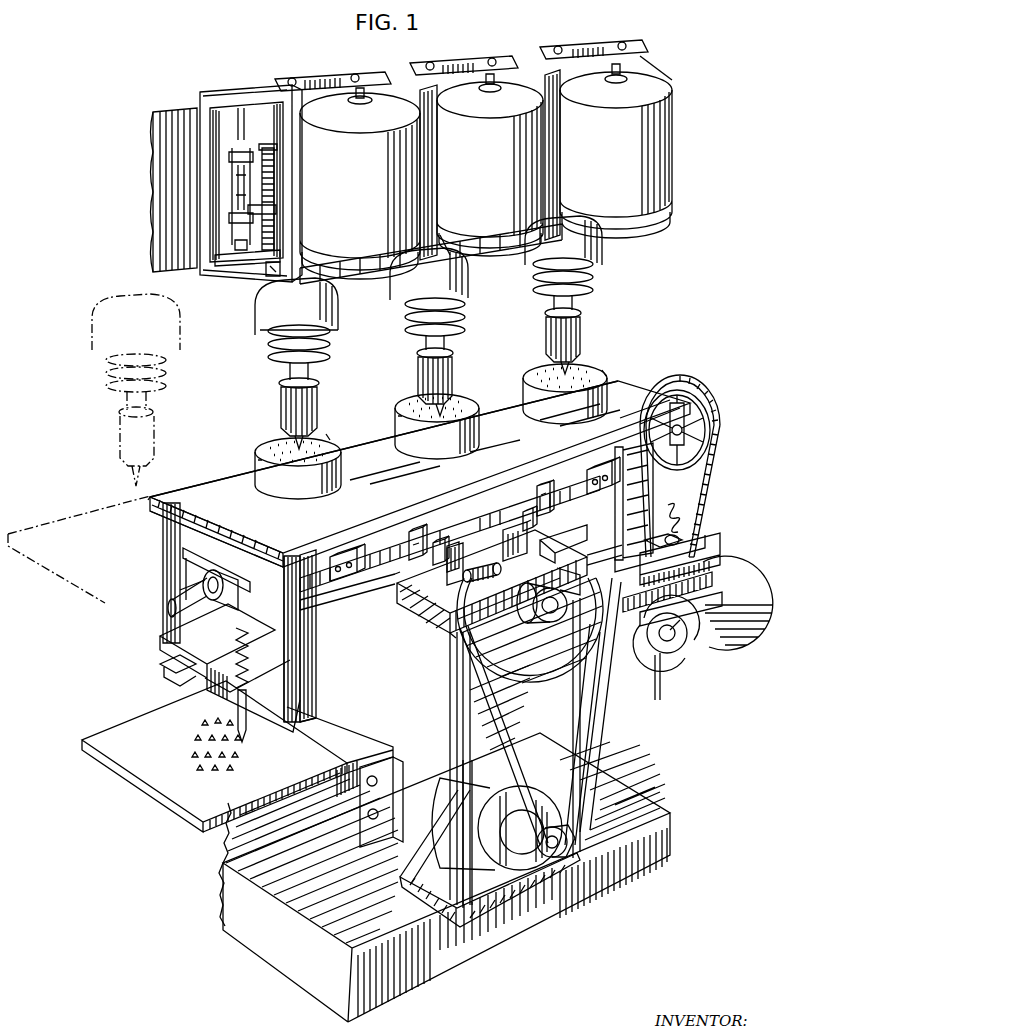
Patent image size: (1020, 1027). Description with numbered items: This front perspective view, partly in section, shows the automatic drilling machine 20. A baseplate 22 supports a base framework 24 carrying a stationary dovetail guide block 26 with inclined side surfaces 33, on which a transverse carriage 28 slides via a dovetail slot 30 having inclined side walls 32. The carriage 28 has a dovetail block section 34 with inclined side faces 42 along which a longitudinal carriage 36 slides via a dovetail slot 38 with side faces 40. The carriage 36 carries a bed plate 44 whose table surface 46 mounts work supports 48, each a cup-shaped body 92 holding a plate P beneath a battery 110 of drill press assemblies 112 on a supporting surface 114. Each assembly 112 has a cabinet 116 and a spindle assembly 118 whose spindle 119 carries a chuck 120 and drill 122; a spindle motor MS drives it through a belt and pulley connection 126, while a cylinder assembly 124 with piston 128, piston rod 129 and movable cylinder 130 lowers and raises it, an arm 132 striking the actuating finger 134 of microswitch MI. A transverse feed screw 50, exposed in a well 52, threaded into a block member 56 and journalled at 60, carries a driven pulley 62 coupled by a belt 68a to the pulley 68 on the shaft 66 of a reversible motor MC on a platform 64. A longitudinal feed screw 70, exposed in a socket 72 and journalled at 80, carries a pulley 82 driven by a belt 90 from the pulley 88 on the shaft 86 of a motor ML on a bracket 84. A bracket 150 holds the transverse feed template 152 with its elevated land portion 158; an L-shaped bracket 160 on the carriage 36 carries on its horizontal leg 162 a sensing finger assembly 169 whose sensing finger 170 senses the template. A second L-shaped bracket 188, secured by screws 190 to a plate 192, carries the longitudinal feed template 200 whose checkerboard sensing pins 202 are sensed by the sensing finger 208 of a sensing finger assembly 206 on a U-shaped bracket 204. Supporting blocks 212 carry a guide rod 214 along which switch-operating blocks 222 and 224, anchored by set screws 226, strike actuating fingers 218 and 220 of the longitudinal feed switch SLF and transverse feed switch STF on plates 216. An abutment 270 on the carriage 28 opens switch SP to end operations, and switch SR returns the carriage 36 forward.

The automatic drilling machine 20 is at (146, 233).
The baseplate 22 is at (672, 815).
The base framework 24 is at (524, 686).
The dovetail guide block 26 is at (487, 574).
The transverse carriage 28 is at (336, 604).
The dovetail slot 30 is at (412, 612).
The inclined side walls 32 is at (400, 606).
The inclined side surfaces 33 is at (440, 640).
The dovetail block section 34 is at (186, 554).
The longitudinal carriage 36 is at (241, 556).
The dovetail slot 38 is at (268, 555).
The side faces 40 is at (224, 590).
The inclined side faces 42 is at (190, 559).
The work-supporting bed plate 44 is at (148, 497).
The table surface 46 is at (228, 486).
The work supports 48 is at (306, 493).
The transverse feed screw 50 is at (555, 572).
The rectangular socket 52 is at (565, 540).
The block member 56 is at (656, 541).
The feed screw journals 60 is at (520, 605).
The driven pulley 62 is at (450, 705).
The platform 64 is at (427, 870).
The motor shaft 66 is at (566, 858).
The pulley 68 is at (580, 845).
The belt 68a is at (598, 718).
The longitudinal feed screw 70 is at (200, 592).
The rectangular recess 72 is at (210, 548).
The feed screw journals 80 is at (170, 606).
The pulley 82 is at (686, 378).
The bracket 84 is at (640, 645).
The motor shaft 86 is at (664, 652).
The pulley 88 is at (665, 700).
The belt 90 is at (706, 495).
The cup-shaped body 92 is at (270, 458).
The battery of drill press assemblies 110 is at (679, 160).
The drill press assembly 112 is at (378, 193).
The supporting surface 114 is at (186, 126).
The mounting and control cabinet 116 is at (241, 97).
The spindle assembly 118 is at (330, 358).
The spindle 119 is at (292, 378).
The chuck 120 is at (283, 404).
The drill 122 is at (292, 452).
The fluid actuated cylinder assembly 124 is at (232, 190).
The belt and pulley driving connection 126 is at (326, 78).
The piston 128 is at (262, 172).
The piston rod 129 is at (241, 130).
The movable cylinder 130 is at (232, 205).
The arm 132 is at (222, 262).
The actuating finger 134 is at (258, 268).
The supporting bracket 150 is at (700, 610).
The transverse feed template 152 is at (672, 525).
The elevated land portion 158 is at (690, 610).
The L-shaped bracket 160 is at (630, 478).
The horizontal leg 162 is at (703, 560).
The sensing finger assembly 169 is at (700, 532).
The sensing finger 170 is at (672, 645).
The second L-shaped bracket 188 is at (350, 800).
The screws 190 is at (380, 778).
The plate 192 is at (360, 728).
The longitudinal feed template 200 is at (135, 780).
The sensing pins 202 is at (225, 762).
The U-shaped bracket 204 is at (316, 677).
The sensing finger assembly 206 is at (250, 668).
The sensing finger 208 is at (248, 750).
The supporting blocks 212 is at (336, 555).
The guide rod 214 is at (370, 566).
The plates 216 is at (510, 528).
The actuating finger 218 is at (440, 541).
The actuating finger 220 is at (528, 510).
The switch-operating block 222 is at (414, 530).
The switch-operating block 224 is at (545, 484).
The set screws 226 is at (452, 544).
The abutment 270 is at (205, 680).
The spindle motor MS is at (373, 248).
The switch SP is at (442, 238).
The switch SR is at (275, 306).
The microswitch MI is at (270, 277).
The plates P is at (328, 432).
The transverse feed switch STF is at (512, 530).
The longitudinal feed switch SLF is at (455, 546).
The longitudinal feed motor ML is at (738, 603).
The transverse feed motor MC is at (497, 821).